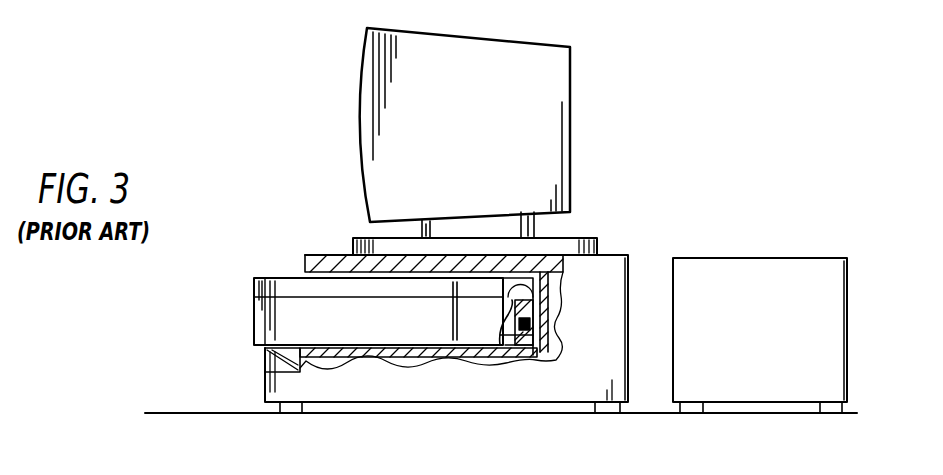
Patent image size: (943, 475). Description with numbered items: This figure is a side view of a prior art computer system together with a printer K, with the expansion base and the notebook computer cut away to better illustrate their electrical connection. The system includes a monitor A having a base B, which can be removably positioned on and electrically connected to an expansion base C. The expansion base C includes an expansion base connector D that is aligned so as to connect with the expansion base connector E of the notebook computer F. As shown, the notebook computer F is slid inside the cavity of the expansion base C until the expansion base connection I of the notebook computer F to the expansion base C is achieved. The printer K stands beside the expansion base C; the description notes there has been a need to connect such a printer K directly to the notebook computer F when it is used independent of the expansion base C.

The monitor A is at (553, 86).
The base B is at (578, 243).
The expansion base C is at (616, 315).
The expansion base connector D is at (540, 357).
The expansion base connector E is at (500, 320).
The notebook computer F is at (252, 318).
The expansion base connection I is at (513, 355).
The printer K is at (760, 258).